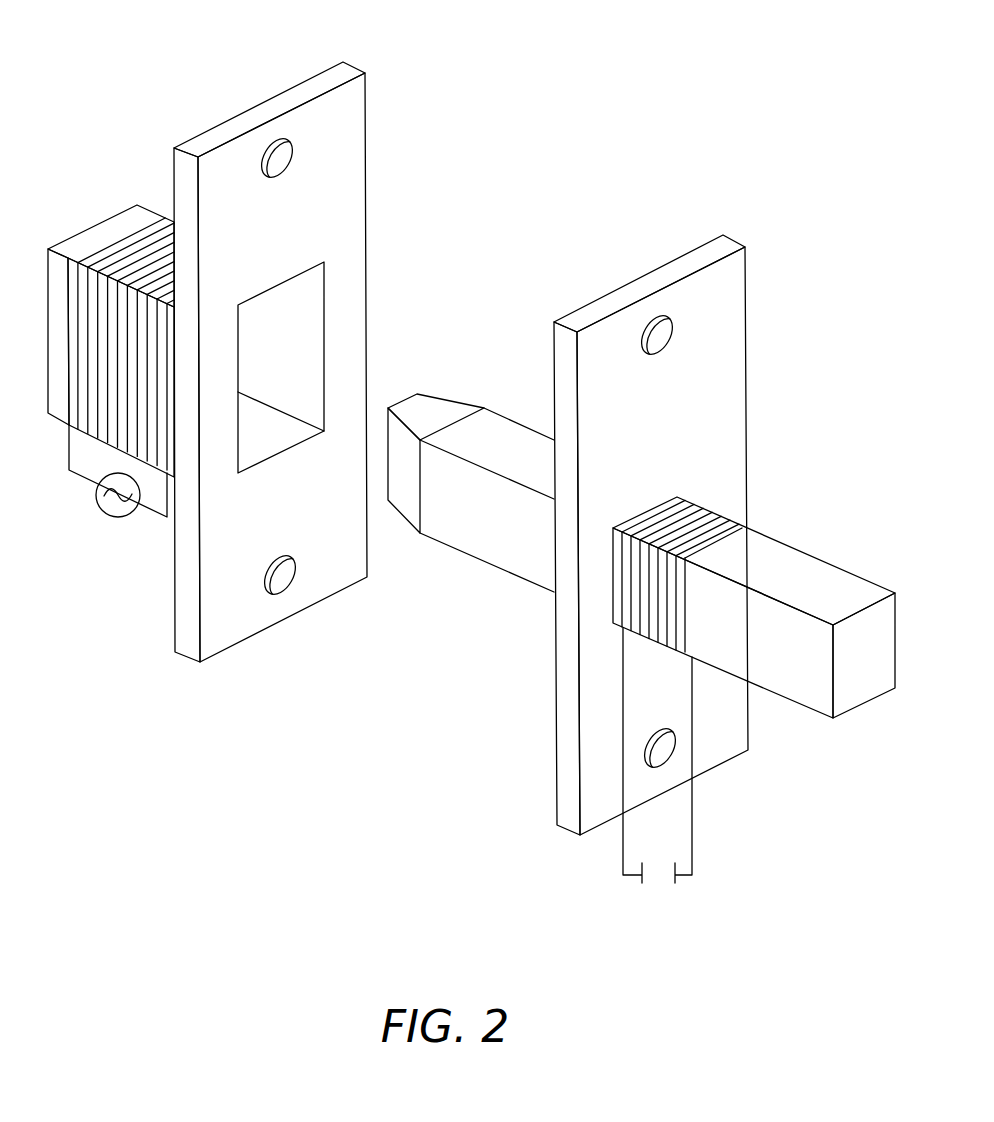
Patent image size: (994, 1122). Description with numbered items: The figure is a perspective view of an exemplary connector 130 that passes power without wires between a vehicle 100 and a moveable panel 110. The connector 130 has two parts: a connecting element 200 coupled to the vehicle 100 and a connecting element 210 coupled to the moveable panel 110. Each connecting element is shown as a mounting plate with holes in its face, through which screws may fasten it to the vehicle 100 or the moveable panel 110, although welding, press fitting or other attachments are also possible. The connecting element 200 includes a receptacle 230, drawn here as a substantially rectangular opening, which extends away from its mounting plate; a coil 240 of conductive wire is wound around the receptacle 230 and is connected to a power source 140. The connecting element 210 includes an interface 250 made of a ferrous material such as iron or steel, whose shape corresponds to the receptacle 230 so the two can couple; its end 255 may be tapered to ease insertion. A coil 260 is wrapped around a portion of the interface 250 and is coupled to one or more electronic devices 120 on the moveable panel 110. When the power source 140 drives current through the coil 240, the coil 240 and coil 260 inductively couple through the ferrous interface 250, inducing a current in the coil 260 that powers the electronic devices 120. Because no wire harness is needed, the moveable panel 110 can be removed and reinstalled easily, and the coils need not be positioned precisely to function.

The vehicle 100 is at (163, 78).
The moveable panel 110 is at (782, 242).
The electronic devices 120 is at (657, 875).
The connector 130 is at (688, 120).
The power source 140 is at (108, 518).
The connecting element 200 is at (321, 348).
The connecting element 210 is at (700, 522).
The receptacle 230 is at (324, 292).
The coil 240 is at (154, 212).
The interface 250 is at (754, 560).
The end 255 is at (445, 413).
The coil 260 is at (693, 495).